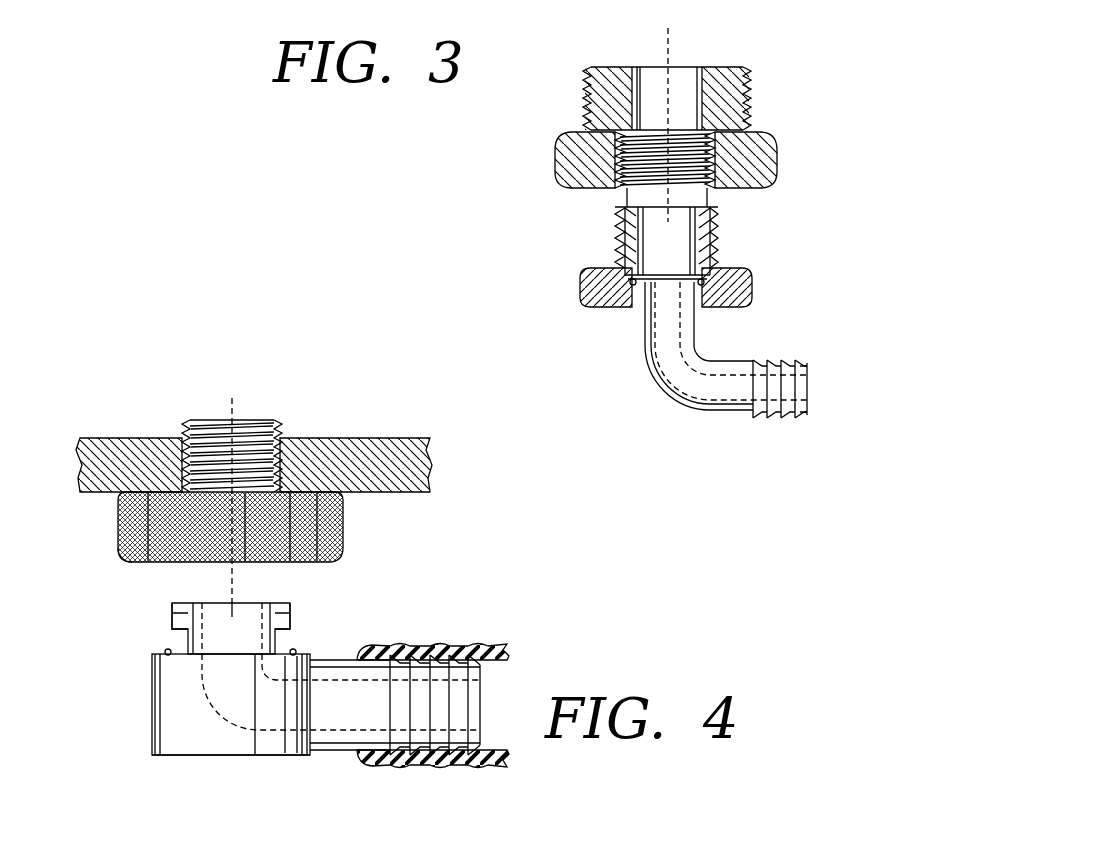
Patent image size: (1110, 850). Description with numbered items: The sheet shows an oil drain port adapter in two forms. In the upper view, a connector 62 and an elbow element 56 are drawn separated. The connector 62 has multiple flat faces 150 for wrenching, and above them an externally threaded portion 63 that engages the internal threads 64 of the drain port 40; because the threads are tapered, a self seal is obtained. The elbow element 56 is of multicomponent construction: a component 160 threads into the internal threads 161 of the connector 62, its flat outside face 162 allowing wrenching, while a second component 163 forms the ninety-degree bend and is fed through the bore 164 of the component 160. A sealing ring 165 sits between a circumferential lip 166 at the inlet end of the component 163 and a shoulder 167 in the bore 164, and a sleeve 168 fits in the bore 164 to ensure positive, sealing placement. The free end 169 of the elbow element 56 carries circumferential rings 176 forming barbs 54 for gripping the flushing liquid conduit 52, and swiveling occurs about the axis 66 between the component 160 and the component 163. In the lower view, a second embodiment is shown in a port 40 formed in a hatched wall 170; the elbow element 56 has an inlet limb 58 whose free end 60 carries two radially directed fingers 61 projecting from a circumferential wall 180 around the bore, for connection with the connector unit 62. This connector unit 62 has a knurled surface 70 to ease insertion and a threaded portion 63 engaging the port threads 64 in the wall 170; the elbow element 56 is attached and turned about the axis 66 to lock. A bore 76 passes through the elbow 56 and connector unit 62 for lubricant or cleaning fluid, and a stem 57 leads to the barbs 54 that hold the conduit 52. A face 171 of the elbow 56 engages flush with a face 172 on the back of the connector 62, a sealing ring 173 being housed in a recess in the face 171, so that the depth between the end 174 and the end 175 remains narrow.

In FIG. 4, the drain port 40 is at (245, 489).
In FIG. 4, the flushing liquid conduit 52 is at (420, 645).
In FIG. 3, the barbs 54 is at (812, 387).
In FIG. 4, the barbs 54 is at (444, 740).
In FIG. 3, the elbow element 56 is at (727, 365).
In FIG. 4, the elbow element 56 is at (289, 739).
In FIG. 4, the hose stem 57 is at (345, 752).
In FIG. 4, the inlet limb 58 is at (195, 615).
In FIG. 4, the free end 60 is at (207, 603).
In FIG. 4, the radially directed fingers 61 is at (172, 620).
In FIG. 3, the connector 62 is at (660, 160).
In FIG. 4, the connector 62 is at (257, 540).
In FIG. 3, the threaded portion 63 is at (587, 92).
In FIG. 4, the threaded portion 63 is at (245, 495).
In FIG. 4, the internal threads 64 is at (267, 438).
In FIG. 3, the axis 66 is at (668, 40).
In FIG. 4, the axis 66 is at (240, 412).
In FIG. 4, the knurled surface 70 is at (346, 526).
In FIG. 3, the bore 76 is at (678, 408).
In FIG. 4, the bore 76 is at (240, 730).
In FIG. 3, the flat faces 150 is at (553, 153).
In FIG. 3, the component 160 is at (682, 261).
In FIG. 3, the internal threads 161 is at (625, 190).
In FIG. 3, the outside face 162 is at (634, 299).
In FIG. 3, the second component 163 is at (688, 364).
In FIG. 3, the bore 164 is at (663, 240).
In FIG. 3, the sealing ring 165 is at (690, 266).
In FIG. 3, the circumferential lip 166 is at (686, 272).
In FIG. 3, the shoulder 167 is at (622, 308).
In FIG. 3, the sleeve 168 is at (616, 247).
In FIG. 3, the free end 169 is at (807, 390).
In FIG. 4, the wall 170 is at (300, 490).
In FIG. 4, the face 171 is at (161, 651).
In FIG. 4, the face 172 is at (160, 551).
In FIG. 4, the sealing ring 173 is at (294, 652).
In FIG. 4, the end 174 is at (212, 422).
In FIG. 4, the end 175 is at (187, 756).
In FIG. 3, the circumferential rings 176 is at (791, 398).
In FIG. 4, the circumferential rings 176 is at (440, 737).
In FIG. 4, the circumferential wall 180 is at (256, 603).